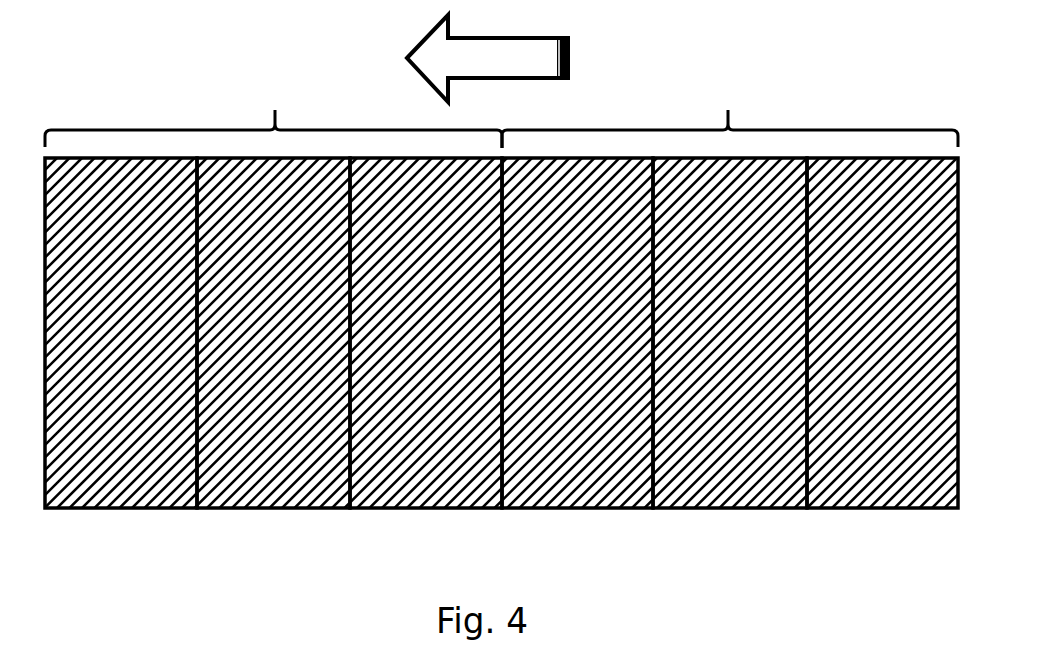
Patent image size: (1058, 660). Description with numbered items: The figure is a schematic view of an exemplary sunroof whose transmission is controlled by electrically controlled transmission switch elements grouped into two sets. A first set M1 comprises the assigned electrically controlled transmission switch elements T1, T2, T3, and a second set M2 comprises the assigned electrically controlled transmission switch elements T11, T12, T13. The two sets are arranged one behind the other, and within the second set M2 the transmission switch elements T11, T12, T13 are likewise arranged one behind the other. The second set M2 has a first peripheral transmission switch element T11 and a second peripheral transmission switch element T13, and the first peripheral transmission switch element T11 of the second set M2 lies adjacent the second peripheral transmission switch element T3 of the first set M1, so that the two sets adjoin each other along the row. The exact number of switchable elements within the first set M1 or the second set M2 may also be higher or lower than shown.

The electrically controlled transmission switch element T1 is at (121, 370).
The electrically controlled transmission switch element T2 is at (273, 370).
The second peripheral transmission switch element of the first set T3 is at (426, 370).
The first peripheral transmission switch element of the second set T11 is at (577, 370).
The electrically controlled transmission switch element T12 is at (730, 370).
The second peripheral transmission switch element of the second set T13 is at (882, 370).
The first set of transmission switch elements M1 is at (273, 100).
The second set of transmission switch elements M2 is at (730, 100).